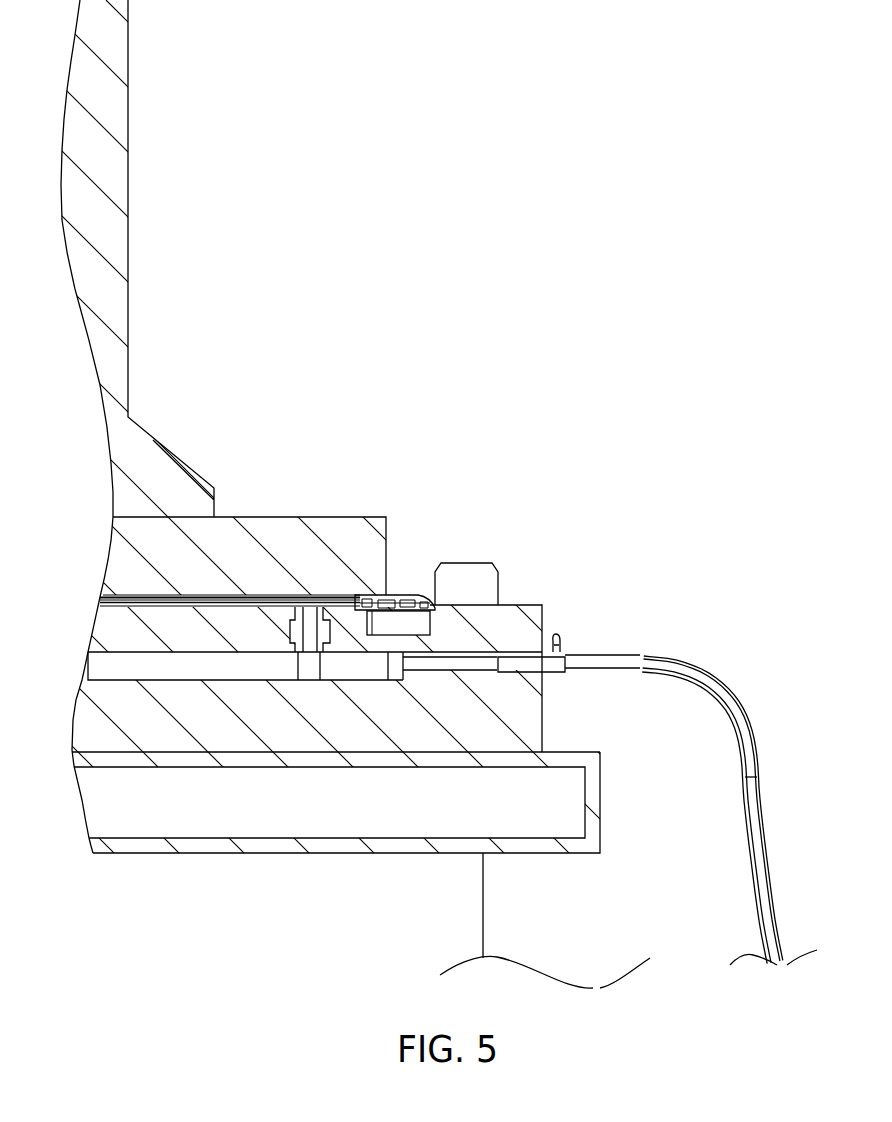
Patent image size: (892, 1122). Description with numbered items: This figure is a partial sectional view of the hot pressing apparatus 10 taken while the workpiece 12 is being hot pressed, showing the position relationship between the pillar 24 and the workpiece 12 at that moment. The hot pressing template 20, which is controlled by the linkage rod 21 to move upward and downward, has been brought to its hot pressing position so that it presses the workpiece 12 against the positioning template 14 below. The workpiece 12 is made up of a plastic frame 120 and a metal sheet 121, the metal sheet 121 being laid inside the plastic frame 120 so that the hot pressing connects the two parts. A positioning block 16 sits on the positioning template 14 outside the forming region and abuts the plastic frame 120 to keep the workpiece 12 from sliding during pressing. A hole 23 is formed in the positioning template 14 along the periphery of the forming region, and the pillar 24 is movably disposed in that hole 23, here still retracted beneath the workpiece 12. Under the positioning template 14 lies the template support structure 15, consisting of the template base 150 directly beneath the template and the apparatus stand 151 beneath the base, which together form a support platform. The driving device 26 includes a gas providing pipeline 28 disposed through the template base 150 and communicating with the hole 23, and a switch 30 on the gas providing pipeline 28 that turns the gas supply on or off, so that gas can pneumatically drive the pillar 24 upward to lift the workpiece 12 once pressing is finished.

The hot pressing apparatus 10 is at (523, 190).
The linkage rod 21 is at (110, 113).
The hot pressing template 20 is at (250, 545).
The workpiece 12 is at (317, 403).
The metal sheet 121 is at (304, 597).
The plastic frame 120 is at (406, 598).
The positioning block 16 is at (472, 572).
The positioning template 14 is at (533, 606).
The driving device 26 is at (742, 553).
The switch 30 is at (563, 641).
The gas providing pipeline 28 is at (648, 666).
The template support structure 15 is at (692, 795).
The template base 150 is at (522, 702).
The apparatus stand 151 is at (586, 893).
The hole 23 is at (292, 622).
The pillar 24 is at (318, 627).